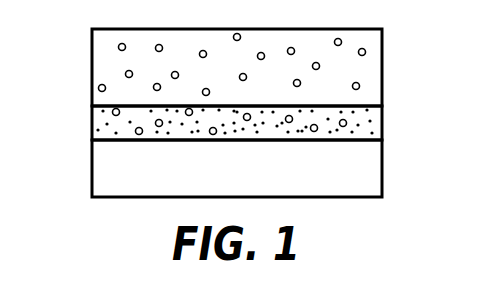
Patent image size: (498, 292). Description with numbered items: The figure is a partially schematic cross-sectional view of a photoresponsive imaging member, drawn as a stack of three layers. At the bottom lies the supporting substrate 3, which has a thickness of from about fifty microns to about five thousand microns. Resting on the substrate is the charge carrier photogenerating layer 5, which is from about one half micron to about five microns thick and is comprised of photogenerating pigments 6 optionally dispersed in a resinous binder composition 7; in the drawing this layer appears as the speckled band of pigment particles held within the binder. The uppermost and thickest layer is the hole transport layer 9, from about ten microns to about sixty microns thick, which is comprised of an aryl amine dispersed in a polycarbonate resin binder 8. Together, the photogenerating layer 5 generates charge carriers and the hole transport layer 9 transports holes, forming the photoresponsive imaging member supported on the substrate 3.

The supporting substrate 3 is at (382, 168).
The charge carrier photogenerating layer 5 is at (382, 125).
The photogenerating pigments 6 is at (370, 119).
The resinous binder composition 7 is at (112, 113).
The resin binder 8 is at (118, 48).
The hole transport layer 9 is at (382, 52).